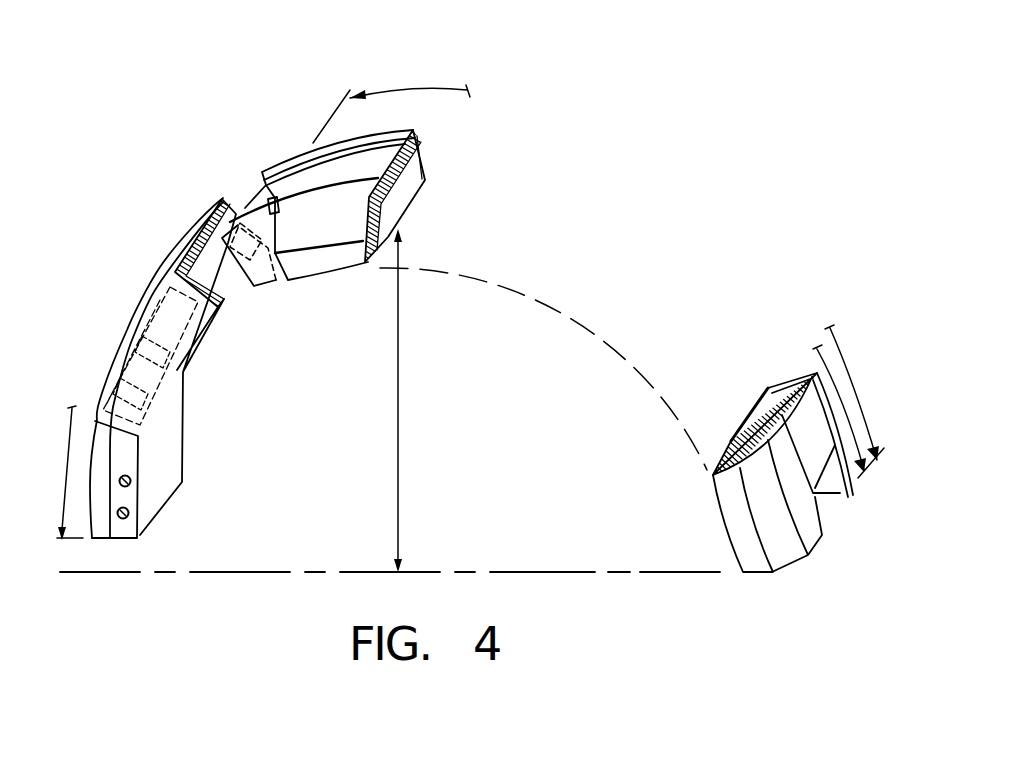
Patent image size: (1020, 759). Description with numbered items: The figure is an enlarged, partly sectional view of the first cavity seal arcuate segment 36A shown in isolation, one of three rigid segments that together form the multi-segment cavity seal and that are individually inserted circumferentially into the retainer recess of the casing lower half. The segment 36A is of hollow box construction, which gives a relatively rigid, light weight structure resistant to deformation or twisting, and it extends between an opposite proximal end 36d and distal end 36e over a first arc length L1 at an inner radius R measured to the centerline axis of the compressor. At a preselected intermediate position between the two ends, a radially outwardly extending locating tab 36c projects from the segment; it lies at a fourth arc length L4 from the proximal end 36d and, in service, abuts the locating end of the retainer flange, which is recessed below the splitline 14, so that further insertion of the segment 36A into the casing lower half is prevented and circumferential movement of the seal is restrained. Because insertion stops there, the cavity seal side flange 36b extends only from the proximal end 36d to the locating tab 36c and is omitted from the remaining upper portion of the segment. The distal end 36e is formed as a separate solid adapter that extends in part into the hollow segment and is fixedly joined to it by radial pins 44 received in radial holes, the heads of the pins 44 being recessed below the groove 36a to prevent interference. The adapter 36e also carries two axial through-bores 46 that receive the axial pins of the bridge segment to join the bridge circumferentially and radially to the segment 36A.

The splitline 14 is at (425, 571).
The inner radius R is at (398, 397).
The first arc length L1 is at (66, 445).
The fourth arc length L4 is at (415, 90).
The first cavity seal arcuate segment 36A is at (315, 205).
The groove 36a is at (404, 164).
The cavity seal side flange 36b is at (310, 267).
The locating tab 36c is at (280, 205).
The proximal end 36d is at (757, 569).
The distal end (adapter) 36e is at (165, 514).
The radial pins 44 is at (149, 390).
The axial through-bores 46 is at (129, 511).